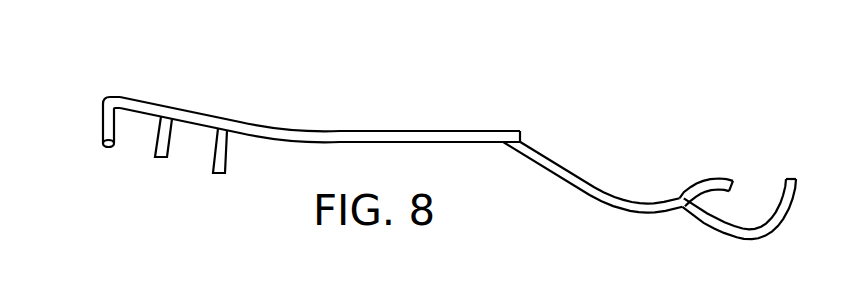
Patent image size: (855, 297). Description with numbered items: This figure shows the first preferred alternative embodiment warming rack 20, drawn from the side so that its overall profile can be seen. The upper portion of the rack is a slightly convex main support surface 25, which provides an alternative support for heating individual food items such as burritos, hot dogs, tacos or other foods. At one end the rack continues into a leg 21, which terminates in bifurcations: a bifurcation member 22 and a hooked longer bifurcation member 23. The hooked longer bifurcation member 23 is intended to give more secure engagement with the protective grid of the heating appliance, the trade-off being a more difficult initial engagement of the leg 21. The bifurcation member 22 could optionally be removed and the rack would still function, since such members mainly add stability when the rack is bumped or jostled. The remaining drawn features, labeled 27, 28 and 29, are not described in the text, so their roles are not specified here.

The first preferred alternative embodiment warming rack 20 is at (151, 46).
The legs 21 is at (598, 196).
The bifurcation member 22 is at (742, 237).
The hooked longer bifurcation member 23 is at (711, 187).
The main support surface 25 is at (360, 129).
The depending lugs 27 is at (213, 173).
The upturned hook end 28 is at (103, 122).
The rolled edge tip 29 is at (105, 146).